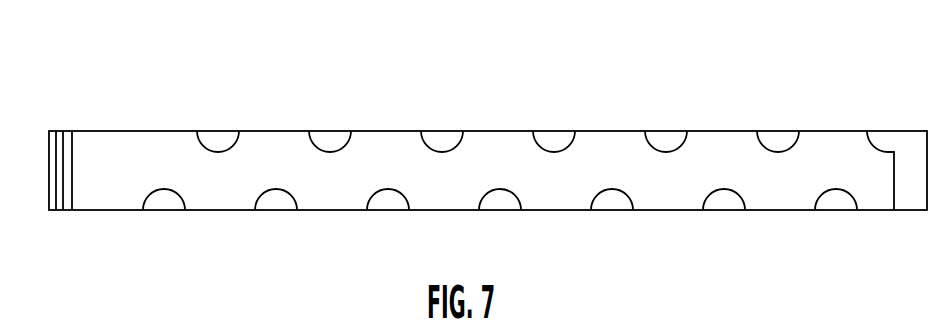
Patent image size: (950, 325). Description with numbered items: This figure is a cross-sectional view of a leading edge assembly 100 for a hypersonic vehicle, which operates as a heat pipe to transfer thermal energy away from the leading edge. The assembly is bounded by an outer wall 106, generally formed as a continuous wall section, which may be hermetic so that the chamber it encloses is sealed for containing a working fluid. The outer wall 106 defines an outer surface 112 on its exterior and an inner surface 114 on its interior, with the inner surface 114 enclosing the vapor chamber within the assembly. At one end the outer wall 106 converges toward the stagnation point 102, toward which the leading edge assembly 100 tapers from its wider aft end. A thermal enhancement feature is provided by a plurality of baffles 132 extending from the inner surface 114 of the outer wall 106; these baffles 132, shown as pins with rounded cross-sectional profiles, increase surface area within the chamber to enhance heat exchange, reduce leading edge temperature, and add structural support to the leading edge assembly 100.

The leading edge assembly 100 is at (123, 104).
The stagnation point 102 is at (48, 168).
The outer wall 106 is at (347, 193).
The outer surface 112 is at (662, 209).
The inner surface 114 is at (385, 159).
The baffles 132 is at (667, 138).